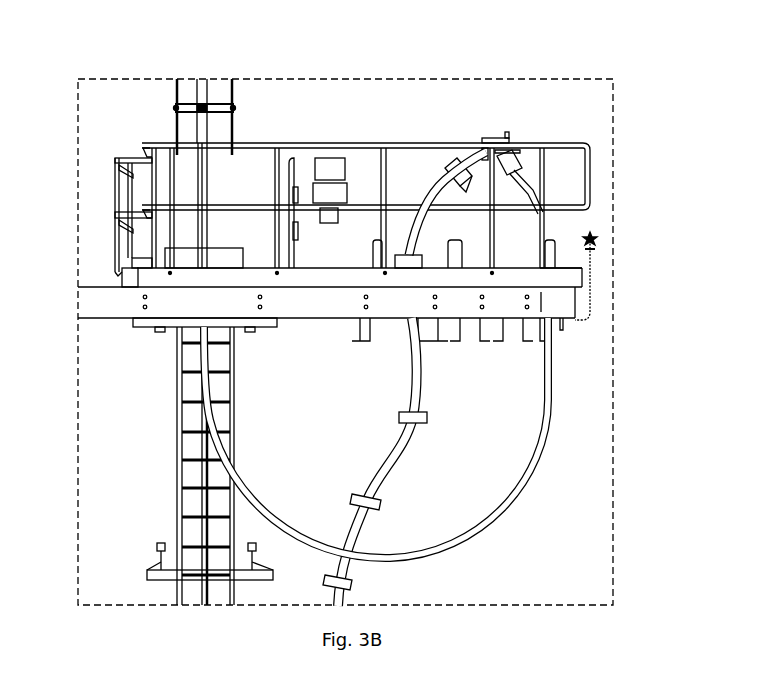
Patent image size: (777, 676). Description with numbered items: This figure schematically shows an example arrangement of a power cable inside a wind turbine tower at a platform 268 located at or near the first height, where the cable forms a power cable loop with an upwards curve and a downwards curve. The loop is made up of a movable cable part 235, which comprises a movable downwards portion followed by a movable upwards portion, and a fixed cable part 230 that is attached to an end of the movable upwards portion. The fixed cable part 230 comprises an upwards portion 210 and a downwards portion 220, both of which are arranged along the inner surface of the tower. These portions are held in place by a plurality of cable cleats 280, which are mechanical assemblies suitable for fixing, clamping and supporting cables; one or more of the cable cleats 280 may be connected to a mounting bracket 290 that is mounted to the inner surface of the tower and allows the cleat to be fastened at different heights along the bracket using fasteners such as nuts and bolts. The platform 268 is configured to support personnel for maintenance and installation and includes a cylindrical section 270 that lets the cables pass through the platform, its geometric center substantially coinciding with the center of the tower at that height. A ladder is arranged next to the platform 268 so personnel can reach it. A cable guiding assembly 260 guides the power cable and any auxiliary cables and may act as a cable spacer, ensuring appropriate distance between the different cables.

The upwards portion 210 is at (565, 225).
The downwards portion 220 is at (432, 188).
The fixed cable part 230 is at (533, 133).
The movable cable part 235 is at (487, 541).
The cable guiding assembly 260 is at (213, 102).
The platform 268 is at (553, 275).
The cylindrical section 270 is at (118, 232).
The cable cleat 280 is at (545, 150).
The mounting bracket 290 is at (505, 133).